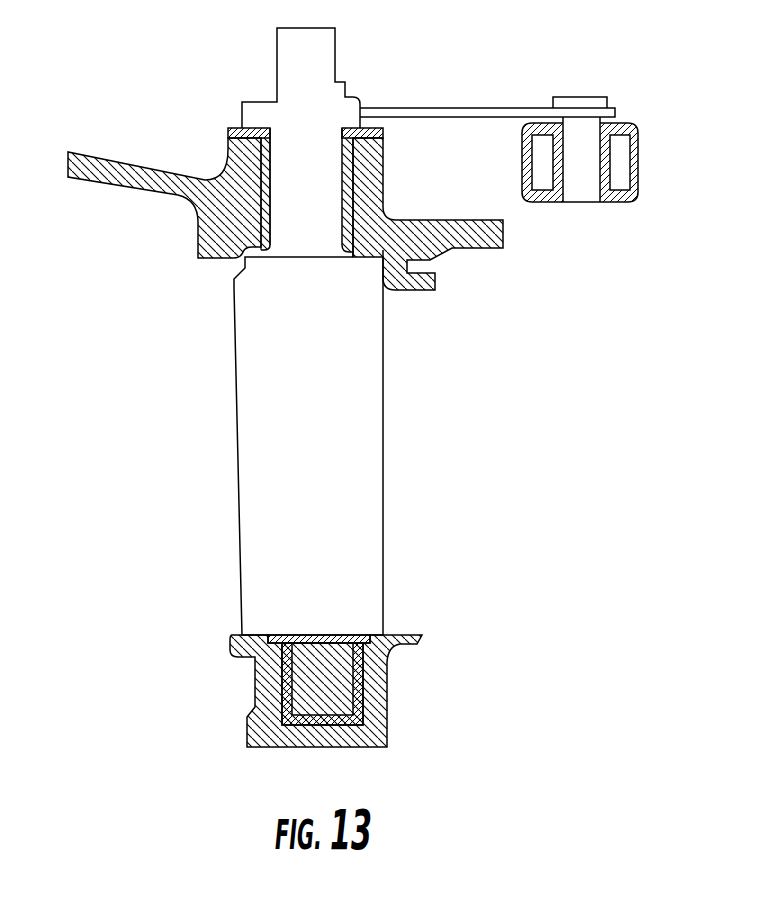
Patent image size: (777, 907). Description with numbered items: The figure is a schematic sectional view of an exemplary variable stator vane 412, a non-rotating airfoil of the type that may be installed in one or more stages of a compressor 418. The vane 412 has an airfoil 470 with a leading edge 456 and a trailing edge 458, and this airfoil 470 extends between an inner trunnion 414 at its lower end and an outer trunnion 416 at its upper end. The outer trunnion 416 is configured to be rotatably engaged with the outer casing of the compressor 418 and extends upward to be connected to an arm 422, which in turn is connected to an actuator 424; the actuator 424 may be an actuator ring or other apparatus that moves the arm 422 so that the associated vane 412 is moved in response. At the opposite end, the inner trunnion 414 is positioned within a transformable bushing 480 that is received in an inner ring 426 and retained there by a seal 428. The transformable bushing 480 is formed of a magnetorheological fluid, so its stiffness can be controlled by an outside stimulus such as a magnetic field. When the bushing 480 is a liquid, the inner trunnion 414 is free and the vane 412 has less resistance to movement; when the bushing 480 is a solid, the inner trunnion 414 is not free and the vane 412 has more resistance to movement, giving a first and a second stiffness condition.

The variable stator vane 412 is at (134, 457).
The inner trunnion 414 is at (343, 678).
The outer trunnion 416 is at (308, 185).
The compressor 418 is at (576, 268).
The arm 422 is at (497, 107).
The actuator 424 is at (638, 145).
The inner ring 426 is at (387, 708).
The seal 428 is at (377, 633).
The leading edge 456 is at (233, 318).
The trailing edge 458 is at (385, 370).
The airfoil 470 is at (443, 402).
The transformable bushing 480 is at (280, 673).